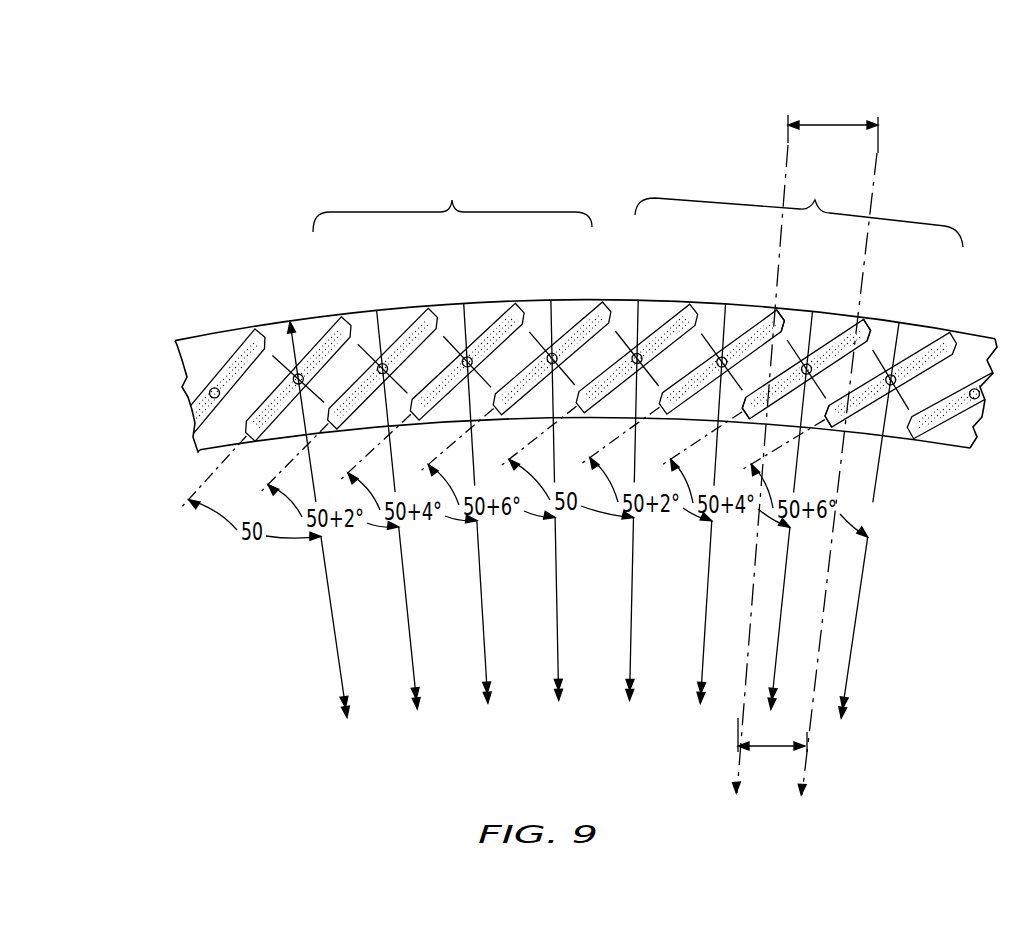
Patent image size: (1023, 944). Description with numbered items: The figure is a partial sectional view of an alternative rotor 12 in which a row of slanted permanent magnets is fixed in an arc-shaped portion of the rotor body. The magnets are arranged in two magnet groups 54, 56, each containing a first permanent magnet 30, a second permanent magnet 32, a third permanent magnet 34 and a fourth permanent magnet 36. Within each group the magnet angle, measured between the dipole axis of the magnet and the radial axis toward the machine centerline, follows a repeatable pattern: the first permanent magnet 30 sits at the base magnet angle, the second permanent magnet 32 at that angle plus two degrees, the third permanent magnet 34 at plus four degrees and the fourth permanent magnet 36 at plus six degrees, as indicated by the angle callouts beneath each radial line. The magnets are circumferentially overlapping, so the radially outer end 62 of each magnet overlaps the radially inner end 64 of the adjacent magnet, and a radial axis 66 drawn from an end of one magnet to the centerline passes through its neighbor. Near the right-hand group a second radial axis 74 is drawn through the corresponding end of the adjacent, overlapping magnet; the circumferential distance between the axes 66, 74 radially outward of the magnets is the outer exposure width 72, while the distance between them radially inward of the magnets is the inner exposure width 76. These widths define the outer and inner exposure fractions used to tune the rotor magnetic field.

The rotor 12 is at (155, 343).
The first permanent magnet 30 is at (318, 322).
The second permanent magnet 32 is at (400, 315).
The third permanent magnet 34 is at (482, 305).
The fourth permanent magnet 36 is at (572, 305).
The magnet group 54 is at (452, 200).
The magnet group 56 is at (799, 209).
The radially outer end 62 is at (785, 308).
The radially inner end 64 is at (742, 410).
The radial axis 66 is at (880, 148).
The outer exposure width 72 is at (838, 125).
The radial axis 74 is at (787, 140).
The inner exposure width 76 is at (773, 748).